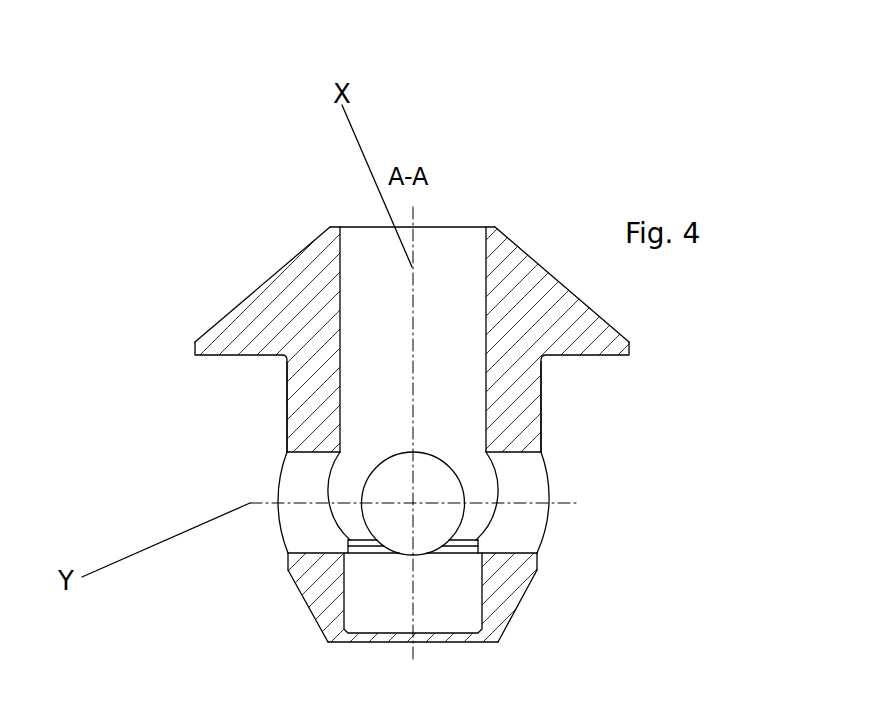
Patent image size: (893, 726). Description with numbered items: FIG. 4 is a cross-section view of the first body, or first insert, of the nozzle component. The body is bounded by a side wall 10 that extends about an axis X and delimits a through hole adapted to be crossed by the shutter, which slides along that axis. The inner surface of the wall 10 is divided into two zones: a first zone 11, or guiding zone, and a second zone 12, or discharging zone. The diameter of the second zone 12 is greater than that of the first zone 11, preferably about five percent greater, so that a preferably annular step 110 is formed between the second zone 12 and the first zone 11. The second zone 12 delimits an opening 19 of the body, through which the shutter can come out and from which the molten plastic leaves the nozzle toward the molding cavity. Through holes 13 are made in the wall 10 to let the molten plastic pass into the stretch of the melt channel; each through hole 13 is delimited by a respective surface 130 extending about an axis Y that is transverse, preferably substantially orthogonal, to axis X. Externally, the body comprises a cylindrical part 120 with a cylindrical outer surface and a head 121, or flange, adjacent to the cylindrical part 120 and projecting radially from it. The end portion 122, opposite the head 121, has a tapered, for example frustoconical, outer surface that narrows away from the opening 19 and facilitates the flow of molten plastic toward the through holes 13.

The wall 10 is at (358, 298).
The first zone 11 is at (460, 592).
The second zone 12 is at (449, 268).
The through hole 13 is at (428, 481).
The opening 19 is at (470, 226).
The step 110 is at (468, 543).
The cylindrical part 120 is at (283, 399).
The head 121 is at (252, 292).
The end portion 122 is at (322, 592).
The surface 130 is at (510, 491).